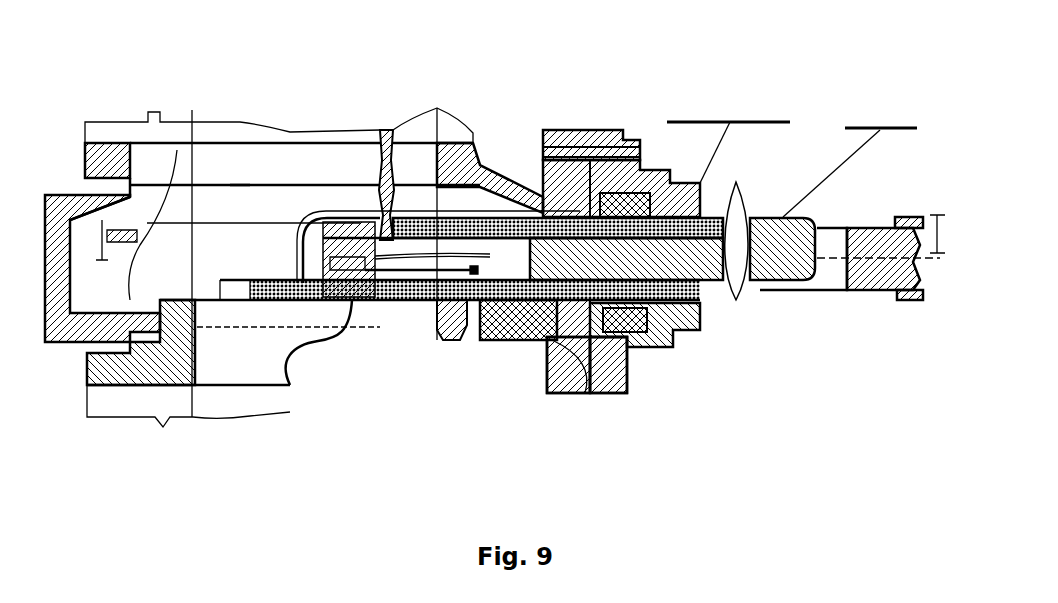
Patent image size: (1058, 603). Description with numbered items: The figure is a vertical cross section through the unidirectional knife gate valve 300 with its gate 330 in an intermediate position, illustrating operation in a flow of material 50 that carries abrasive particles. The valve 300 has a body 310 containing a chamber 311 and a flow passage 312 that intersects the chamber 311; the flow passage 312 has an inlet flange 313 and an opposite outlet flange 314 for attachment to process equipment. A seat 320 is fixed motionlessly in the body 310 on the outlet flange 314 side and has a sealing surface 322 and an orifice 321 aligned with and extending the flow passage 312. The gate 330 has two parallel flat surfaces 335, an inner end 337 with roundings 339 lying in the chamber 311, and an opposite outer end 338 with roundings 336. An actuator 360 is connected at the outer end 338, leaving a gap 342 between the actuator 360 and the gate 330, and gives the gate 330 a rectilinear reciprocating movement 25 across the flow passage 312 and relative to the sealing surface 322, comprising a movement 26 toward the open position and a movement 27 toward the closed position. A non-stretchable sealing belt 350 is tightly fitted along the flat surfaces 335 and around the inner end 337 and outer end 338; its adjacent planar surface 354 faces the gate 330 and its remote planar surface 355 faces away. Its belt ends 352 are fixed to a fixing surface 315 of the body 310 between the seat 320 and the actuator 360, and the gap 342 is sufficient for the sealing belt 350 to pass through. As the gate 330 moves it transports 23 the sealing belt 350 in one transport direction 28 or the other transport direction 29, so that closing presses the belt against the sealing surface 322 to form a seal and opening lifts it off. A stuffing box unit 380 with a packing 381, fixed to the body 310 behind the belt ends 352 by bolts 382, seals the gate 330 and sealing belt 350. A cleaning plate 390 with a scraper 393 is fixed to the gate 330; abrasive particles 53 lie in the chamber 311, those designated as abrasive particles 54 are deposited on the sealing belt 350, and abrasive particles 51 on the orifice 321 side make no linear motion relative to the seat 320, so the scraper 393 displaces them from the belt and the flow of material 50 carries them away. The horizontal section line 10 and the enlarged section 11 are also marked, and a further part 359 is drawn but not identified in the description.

The unidirectional knife gate valve 300 is at (410, 33).
The body 310 is at (67, 345).
The chamber 311 is at (108, 296).
The flow passage 312 is at (318, 181).
The inlet flange 313 is at (130, 153).
The outlet flange 314 is at (107, 385).
The fixing surface 315 is at (583, 393).
The seat 320 is at (193, 390).
The orifice 321 is at (280, 364).
The sealing surface 322 is at (177, 150).
The cleaning plate 390 is at (250, 280).
The scraper 393 is at (335, 330).
The abrasive particles 53 is at (143, 213).
The flow of material 50 is at (238, 177).
The section line 10 is at (518, 237).
The abrasive particles 54 is at (377, 180).
The packing 381 is at (530, 170).
The bolts 382 is at (602, 145).
The transport 23 is at (787, 80).
The direction of transport 29 is at (698, 107).
The direction of transport 28 is at (760, 107).
The rectilinear reciprocating movement 25 is at (918, 88).
The movement to the closed position 27 is at (862, 114).
The movement to the open position 26 is at (898, 114).
The gate 330 is at (800, 217).
The flat surfaces 335 is at (743, 183).
The adjacent planar surface 354 is at (380, 325).
The remote planar surface 355 is at (412, 307).
The abrasive particles 51 is at (427, 307).
The section 11 is at (225, 385).
The bracket 359 is at (453, 340).
The inner end 337 is at (500, 313).
The stuffing box unit 380 is at (633, 373).
The roundings 339 is at (543, 393).
The sealing belt 350 is at (697, 337).
The belt ends 352 is at (647, 343).
The roundings 336 is at (817, 287).
The outer end 338 is at (853, 257).
The gap 342 is at (862, 228).
The actuator 360 is at (907, 300).